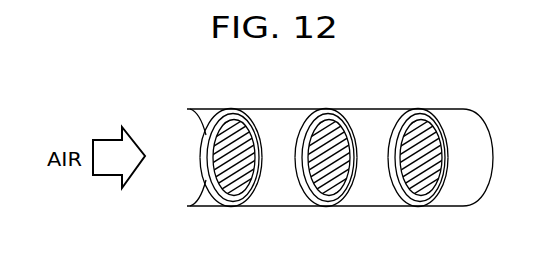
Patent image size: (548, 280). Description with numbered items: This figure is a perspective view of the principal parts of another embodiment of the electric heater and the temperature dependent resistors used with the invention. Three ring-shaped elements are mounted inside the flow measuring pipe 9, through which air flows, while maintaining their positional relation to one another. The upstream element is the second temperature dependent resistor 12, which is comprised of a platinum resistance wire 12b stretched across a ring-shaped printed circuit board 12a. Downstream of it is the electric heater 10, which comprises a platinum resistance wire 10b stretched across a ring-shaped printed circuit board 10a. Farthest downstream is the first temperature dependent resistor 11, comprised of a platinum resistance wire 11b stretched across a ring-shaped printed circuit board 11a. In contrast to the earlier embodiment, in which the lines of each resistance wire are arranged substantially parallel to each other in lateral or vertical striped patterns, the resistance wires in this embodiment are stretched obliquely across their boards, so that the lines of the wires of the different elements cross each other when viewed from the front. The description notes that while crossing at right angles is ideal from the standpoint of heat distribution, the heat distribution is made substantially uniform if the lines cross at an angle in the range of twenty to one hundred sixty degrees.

The flow measuring pipe 9 is at (463, 109).
The electric heater 10 is at (333, 207).
The ring-shaped printed circuit board 10a is at (328, 109).
The platinum resistance wire 10b is at (307, 207).
The first temperature dependent resistor 11 is at (424, 207).
The ring-shaped printed circuit board 11a is at (420, 109).
The platinum resistance wire 11b is at (410, 207).
The second temperature dependent resistor 12 is at (229, 207).
The ring-shaped printed circuit board 12a is at (233, 109).
The platinum resistance wire 12b is at (211, 207).